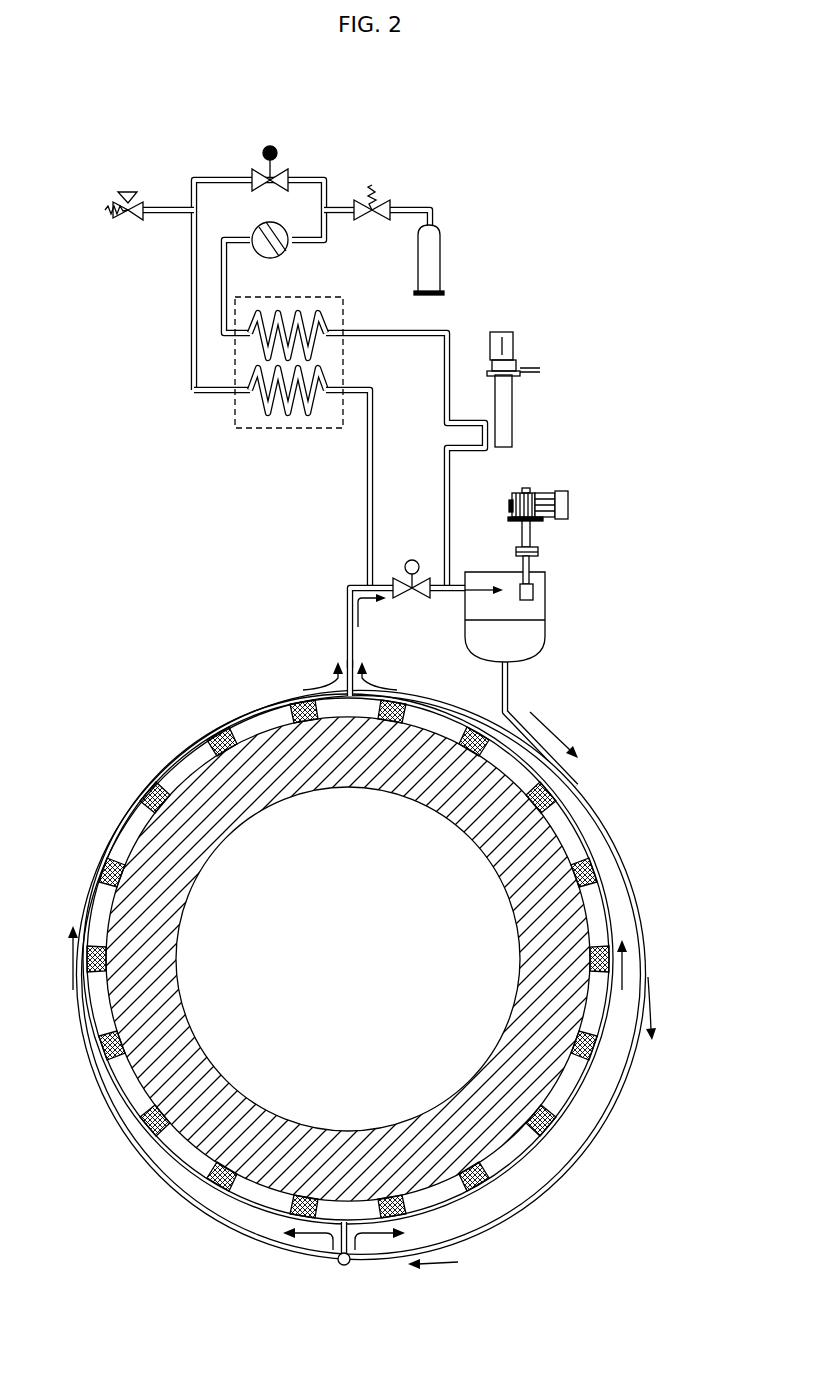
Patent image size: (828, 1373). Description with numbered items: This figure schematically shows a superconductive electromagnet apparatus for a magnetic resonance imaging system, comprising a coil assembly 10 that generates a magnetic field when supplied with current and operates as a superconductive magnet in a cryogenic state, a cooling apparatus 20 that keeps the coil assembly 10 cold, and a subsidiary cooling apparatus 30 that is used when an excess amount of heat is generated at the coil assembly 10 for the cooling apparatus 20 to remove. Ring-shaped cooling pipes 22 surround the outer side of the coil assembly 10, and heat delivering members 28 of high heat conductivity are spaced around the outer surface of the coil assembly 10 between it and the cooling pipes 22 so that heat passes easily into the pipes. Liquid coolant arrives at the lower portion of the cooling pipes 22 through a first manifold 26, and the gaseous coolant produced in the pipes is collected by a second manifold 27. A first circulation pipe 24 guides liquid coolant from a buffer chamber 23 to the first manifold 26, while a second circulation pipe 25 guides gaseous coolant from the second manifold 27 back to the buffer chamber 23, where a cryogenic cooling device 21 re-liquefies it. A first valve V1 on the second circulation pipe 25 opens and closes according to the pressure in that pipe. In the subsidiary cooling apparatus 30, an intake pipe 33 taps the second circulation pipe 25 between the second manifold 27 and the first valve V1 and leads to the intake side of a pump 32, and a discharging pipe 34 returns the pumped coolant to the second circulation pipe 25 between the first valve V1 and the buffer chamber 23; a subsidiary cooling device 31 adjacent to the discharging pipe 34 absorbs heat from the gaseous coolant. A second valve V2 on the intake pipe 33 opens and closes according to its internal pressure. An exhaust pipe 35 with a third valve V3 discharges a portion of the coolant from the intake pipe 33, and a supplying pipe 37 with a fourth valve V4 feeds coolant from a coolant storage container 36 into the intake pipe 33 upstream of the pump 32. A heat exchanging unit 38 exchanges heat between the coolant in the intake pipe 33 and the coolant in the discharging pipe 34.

The coil assembly 10 is at (373, 951).
The cooling apparatus 20 is at (562, 575).
The cryogenic cooling device 21 is at (535, 538).
The cooling pipes 22 is at (117, 823).
The buffer chamber 23 is at (532, 645).
The first circulation pipe 24 is at (580, 772).
The second circulation pipe 25 is at (348, 592).
The first manifold 26 is at (343, 1262).
The second manifold 27 is at (345, 668).
The heat delivering members 28 is at (153, 785).
The subsidiary cooling apparatus 30 is at (365, 354).
The subsidiary cooling device 31 is at (512, 410).
The pump 32 is at (288, 248).
The intake pipe 33 is at (193, 328).
The discharging pipe 34 is at (383, 331).
The exhaust pipe 35 is at (166, 208).
The coolant storage container 36 is at (441, 250).
The supplying pipe 37 is at (431, 207).
The heat exchanging unit 38 is at (250, 428).
The first valve V1 is at (410, 600).
The second valve V2 is at (282, 170).
The third valve V3 is at (128, 192).
The fourth valve V4 is at (381, 200).